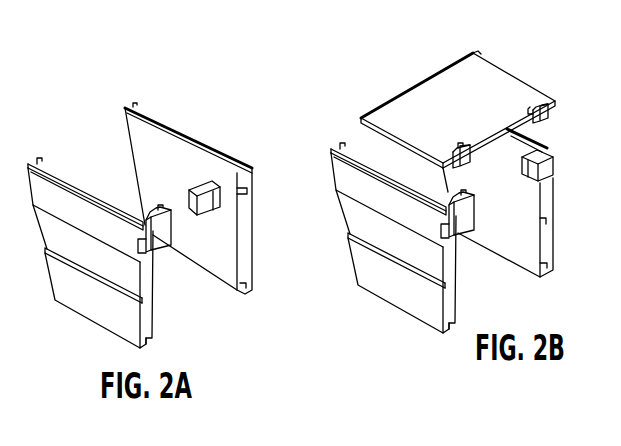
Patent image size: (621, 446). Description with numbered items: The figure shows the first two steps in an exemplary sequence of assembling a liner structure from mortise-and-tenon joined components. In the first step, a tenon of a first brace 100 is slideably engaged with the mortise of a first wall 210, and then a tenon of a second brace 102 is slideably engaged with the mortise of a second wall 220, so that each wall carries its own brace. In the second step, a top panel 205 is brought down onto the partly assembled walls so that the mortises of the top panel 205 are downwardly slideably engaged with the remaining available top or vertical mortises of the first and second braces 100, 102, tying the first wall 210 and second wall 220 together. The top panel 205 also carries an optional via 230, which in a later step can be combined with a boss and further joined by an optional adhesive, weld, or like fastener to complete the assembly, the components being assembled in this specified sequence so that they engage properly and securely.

In FIG. 2A, the first brace 100 is at (158, 233).
In FIG. 2A, the second brace 102 is at (210, 211).
In FIG. 2B, the top panel 205 is at (402, 124).
In FIG. 2A, the first wall 210 is at (107, 320).
In FIG. 2A, the second wall 220 is at (253, 262).
In FIG. 2B, the via 230 is at (545, 97).